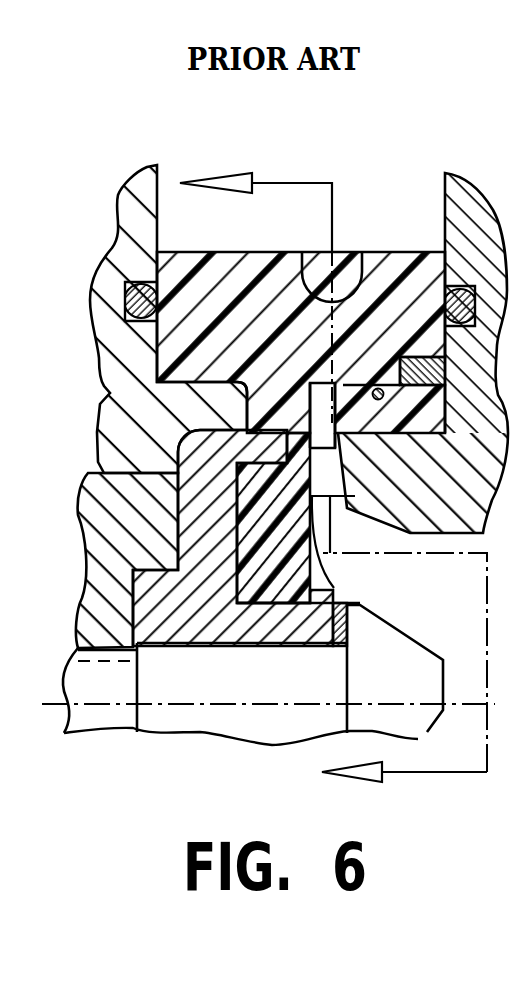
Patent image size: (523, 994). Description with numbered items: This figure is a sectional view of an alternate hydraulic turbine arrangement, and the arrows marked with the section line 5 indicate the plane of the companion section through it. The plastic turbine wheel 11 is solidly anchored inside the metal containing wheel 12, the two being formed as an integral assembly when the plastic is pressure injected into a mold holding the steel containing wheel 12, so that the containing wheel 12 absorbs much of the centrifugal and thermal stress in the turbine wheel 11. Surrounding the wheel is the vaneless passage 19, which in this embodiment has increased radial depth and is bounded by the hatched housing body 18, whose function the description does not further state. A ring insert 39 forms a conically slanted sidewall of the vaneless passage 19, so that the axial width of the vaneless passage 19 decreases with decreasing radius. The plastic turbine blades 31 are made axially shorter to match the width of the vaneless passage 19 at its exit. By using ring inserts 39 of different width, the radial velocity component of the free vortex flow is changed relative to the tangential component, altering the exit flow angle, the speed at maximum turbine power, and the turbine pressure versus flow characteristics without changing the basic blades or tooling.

The section 5— 5 is at (333, 458).
The turbine wheel 11 is at (264, 600).
The containing wheel 12 is at (185, 620).
The housing body 18 is at (261, 293).
The vaneless passage 19 is at (321, 418).
The turbine blades 31 is at (346, 483).
The ring insert 39 is at (428, 357).